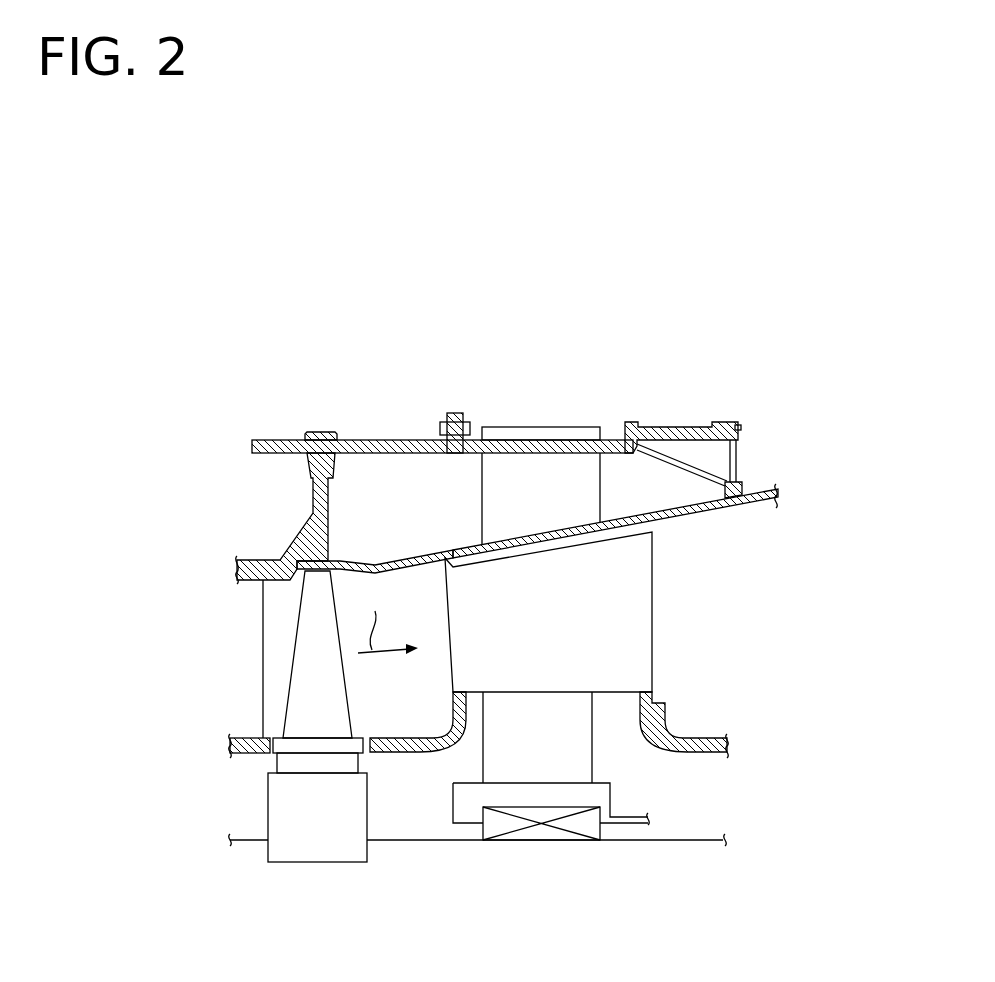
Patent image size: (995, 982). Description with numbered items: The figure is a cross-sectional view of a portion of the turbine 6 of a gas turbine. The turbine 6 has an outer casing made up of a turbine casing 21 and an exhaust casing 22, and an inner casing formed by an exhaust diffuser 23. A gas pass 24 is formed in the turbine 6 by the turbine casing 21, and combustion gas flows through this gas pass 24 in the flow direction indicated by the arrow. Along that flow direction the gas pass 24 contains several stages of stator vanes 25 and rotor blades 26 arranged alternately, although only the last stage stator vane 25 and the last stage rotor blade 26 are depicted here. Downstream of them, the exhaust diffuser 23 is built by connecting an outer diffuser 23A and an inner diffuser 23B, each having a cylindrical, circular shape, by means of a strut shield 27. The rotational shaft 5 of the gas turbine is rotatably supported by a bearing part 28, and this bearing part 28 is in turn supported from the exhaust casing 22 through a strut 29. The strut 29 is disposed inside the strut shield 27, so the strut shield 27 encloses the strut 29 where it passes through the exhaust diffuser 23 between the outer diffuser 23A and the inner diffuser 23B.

The rotational shaft 5 is at (667, 840).
The turbine 6 is at (325, 364).
The turbine casing 21 is at (386, 432).
The exhaust casing 22 is at (664, 418).
The exhaust diffuser 23 is at (537, 616).
The outer diffuser 23A is at (420, 554).
The inner diffuser 23B is at (697, 736).
The gas pass 24 is at (407, 698).
The stator vane 25 is at (274, 630).
The rotor blade 26 is at (278, 678).
The strut shield 27 is at (622, 641).
The bearing part 28 is at (553, 835).
The strut 29 is at (568, 429).